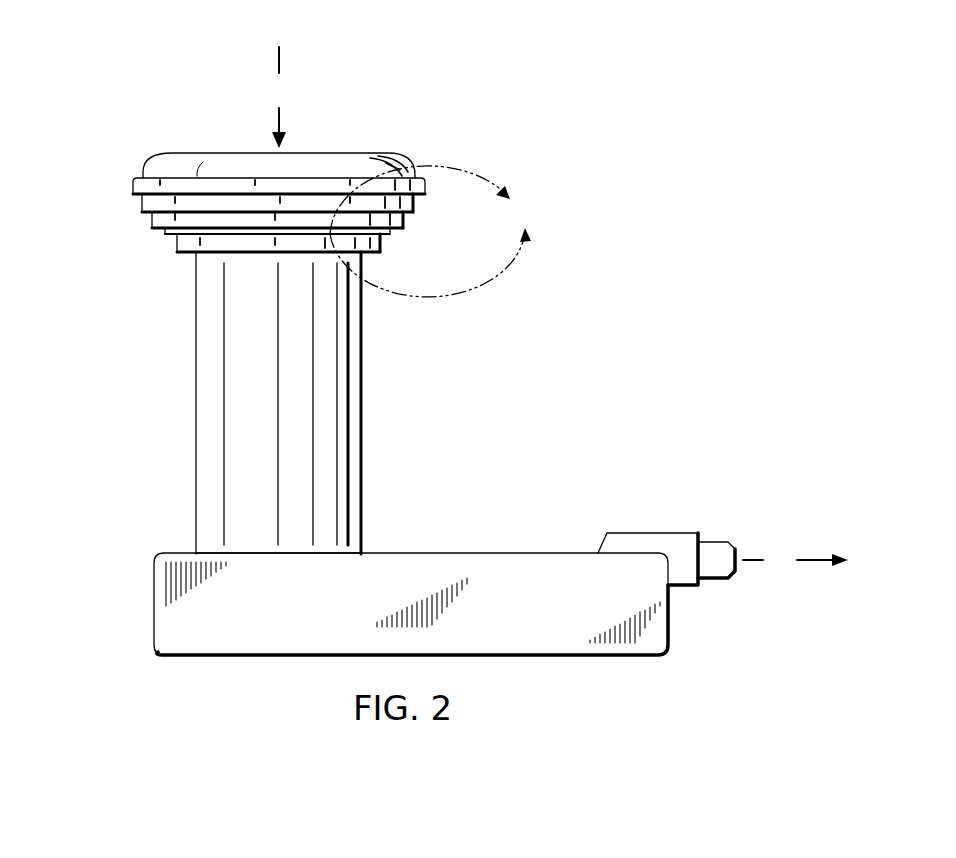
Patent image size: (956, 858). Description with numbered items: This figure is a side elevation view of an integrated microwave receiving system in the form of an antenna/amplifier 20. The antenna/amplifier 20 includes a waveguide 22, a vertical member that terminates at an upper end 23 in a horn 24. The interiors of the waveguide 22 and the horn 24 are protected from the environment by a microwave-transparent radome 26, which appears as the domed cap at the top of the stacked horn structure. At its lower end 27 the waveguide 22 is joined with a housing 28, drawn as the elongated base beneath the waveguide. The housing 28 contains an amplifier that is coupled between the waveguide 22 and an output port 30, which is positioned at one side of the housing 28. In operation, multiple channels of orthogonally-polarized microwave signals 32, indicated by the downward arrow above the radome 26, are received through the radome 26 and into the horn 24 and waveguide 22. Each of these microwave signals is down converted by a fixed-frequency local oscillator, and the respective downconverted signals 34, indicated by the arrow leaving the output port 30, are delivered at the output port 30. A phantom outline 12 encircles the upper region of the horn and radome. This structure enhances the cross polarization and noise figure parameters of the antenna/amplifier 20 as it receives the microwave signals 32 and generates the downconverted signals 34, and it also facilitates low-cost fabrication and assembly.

The detail region of cap 12 is at (435, 231).
The antenna/amplifier 20 is at (556, 301).
The waveguide 22 is at (190, 384).
The upper end 23 is at (196, 262).
The horn 24 is at (142, 205).
The radome 26 is at (373, 152).
The lower end 27 is at (196, 542).
The housing 28 is at (513, 553).
The output port 30 is at (718, 540).
The microwave signals 32 is at (279, 97).
The downconverted signals 34 is at (795, 561).